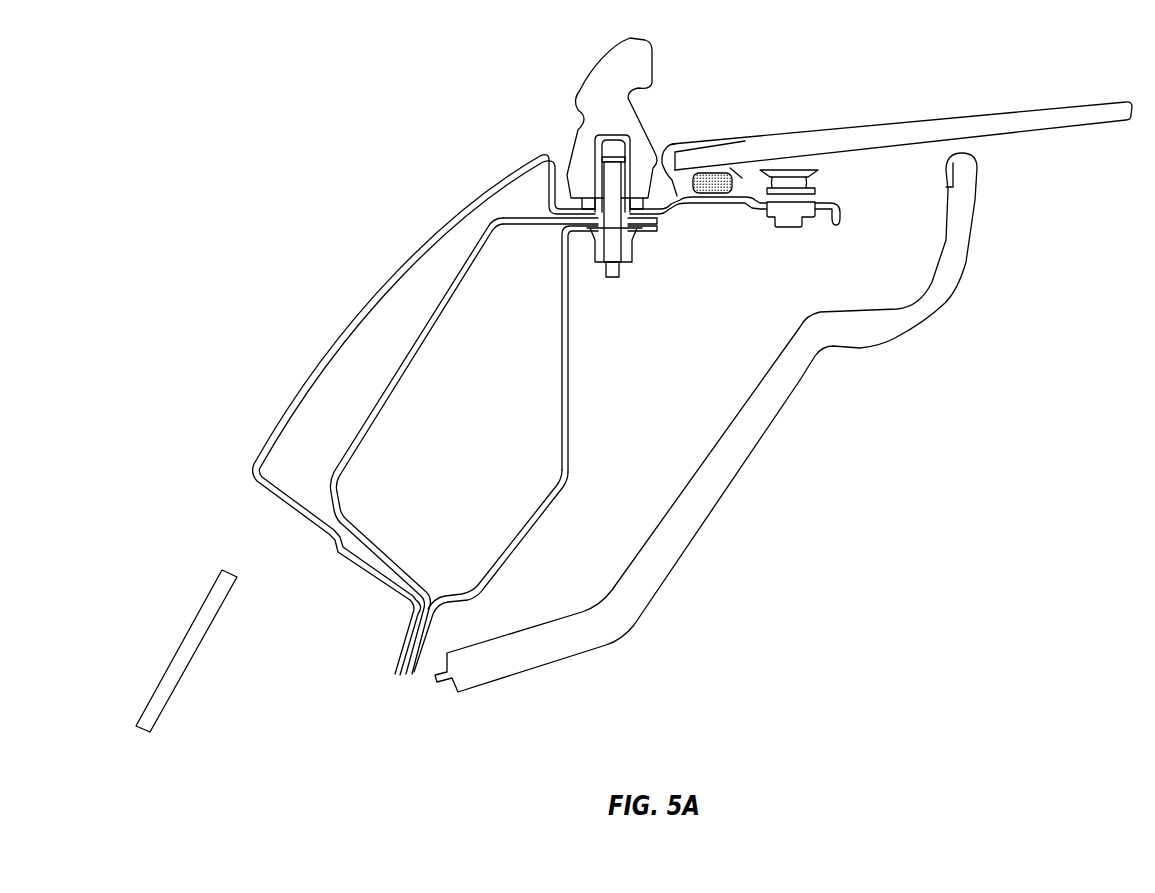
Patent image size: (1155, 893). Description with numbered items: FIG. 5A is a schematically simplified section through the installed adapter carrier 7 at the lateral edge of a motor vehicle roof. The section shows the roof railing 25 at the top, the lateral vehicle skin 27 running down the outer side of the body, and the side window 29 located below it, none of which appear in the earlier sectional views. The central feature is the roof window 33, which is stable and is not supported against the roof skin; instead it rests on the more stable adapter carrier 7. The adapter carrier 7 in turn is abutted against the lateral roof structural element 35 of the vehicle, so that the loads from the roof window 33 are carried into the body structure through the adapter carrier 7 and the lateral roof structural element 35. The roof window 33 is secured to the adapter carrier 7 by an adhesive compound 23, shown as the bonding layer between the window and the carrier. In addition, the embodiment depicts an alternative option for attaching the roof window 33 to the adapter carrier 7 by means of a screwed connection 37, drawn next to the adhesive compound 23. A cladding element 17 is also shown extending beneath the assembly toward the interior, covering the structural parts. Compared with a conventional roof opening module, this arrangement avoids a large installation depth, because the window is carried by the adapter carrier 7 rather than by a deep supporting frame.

The adapter carrier 7 is at (663, 211).
The cladding element 17 is at (950, 268).
The adhesive compound 23 is at (715, 170).
The roof railing 25 is at (613, 60).
The lateral vehicle skin 27 is at (352, 315).
The side window 29 is at (190, 640).
The roof window 33 is at (1080, 104).
The lateral roof structural element 35 is at (361, 435).
The screwed connection 37 is at (790, 212).